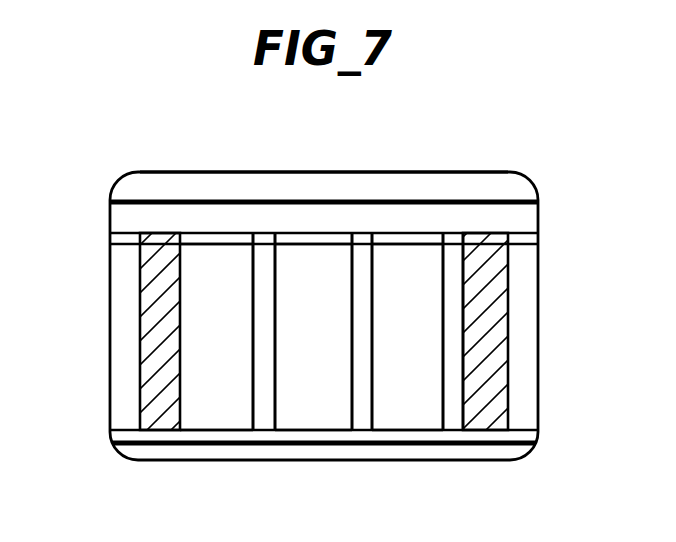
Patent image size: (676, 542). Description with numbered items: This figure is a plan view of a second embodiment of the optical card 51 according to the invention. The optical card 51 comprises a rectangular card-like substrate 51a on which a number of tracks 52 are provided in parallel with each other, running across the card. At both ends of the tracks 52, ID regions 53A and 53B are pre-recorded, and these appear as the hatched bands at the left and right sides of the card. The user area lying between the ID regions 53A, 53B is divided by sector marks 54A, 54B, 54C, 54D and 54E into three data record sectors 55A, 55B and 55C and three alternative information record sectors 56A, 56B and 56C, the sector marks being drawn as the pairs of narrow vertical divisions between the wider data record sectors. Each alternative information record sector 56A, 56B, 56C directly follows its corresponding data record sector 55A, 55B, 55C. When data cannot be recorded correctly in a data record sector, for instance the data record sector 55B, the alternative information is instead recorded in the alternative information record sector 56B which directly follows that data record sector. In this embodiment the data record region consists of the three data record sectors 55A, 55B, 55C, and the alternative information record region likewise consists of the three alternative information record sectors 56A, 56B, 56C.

The optical card 51 is at (450, 167).
The rectangular card-like substrate 51a is at (325, 173).
The tracks 52 is at (513, 242).
The ID region 53A is at (145, 337).
The ID region 53B is at (493, 332).
The sector mark 54A is at (252, 263).
The sector mark 54B is at (276, 263).
The sector mark 54C is at (318, 331).
The sector mark 54D is at (403, 331).
The sector mark 54E is at (442, 258).
The data record sector 55A is at (240, 359).
The data record sector 55B is at (335, 358).
The data record sector 55C is at (427, 358).
The alternative information record sector 56A is at (263, 420).
The alternative information record sector 56B is at (363, 420).
The alternative information record sector 56C is at (453, 420).